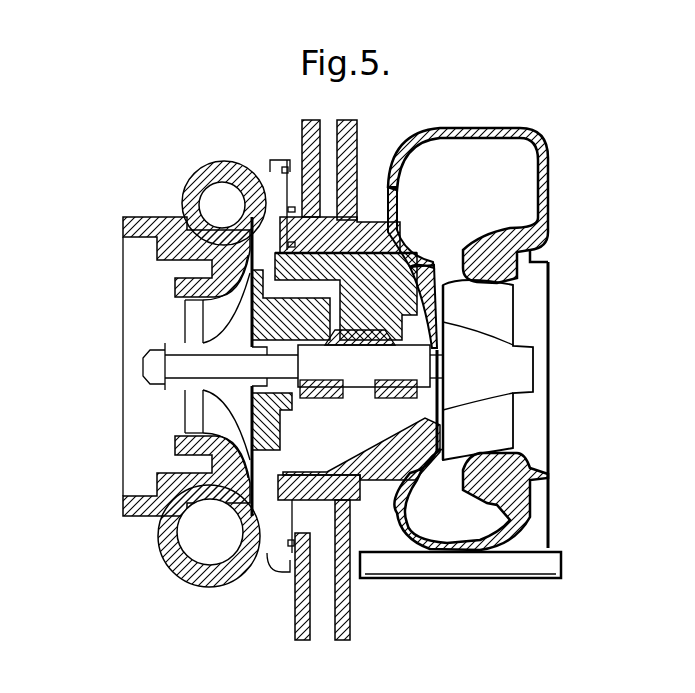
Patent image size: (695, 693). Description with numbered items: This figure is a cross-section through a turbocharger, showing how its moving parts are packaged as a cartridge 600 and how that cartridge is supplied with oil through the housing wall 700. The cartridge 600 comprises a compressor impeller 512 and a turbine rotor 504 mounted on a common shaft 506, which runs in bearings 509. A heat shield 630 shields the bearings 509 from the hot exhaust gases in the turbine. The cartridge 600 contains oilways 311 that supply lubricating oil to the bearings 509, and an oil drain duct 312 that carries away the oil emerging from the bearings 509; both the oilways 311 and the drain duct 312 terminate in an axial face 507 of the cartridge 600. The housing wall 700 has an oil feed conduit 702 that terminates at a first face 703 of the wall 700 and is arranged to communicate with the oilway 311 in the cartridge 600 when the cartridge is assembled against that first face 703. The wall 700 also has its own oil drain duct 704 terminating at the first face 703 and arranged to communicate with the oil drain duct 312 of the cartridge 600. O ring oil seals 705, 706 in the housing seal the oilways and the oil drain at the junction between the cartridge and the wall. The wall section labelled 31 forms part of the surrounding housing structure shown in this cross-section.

The turbine housing wall 31 is at (533, 153).
The oilways 311 is at (250, 220).
The oil drain duct 312 is at (247, 515).
The turbine rotor 504 is at (497, 308).
The common shaft 506 is at (413, 368).
The axial face 507 is at (295, 575).
The bearings 509 is at (381, 397).
The compressor impeller 512 is at (217, 387).
The cartridge 600 is at (410, 263).
The heat shield 630 is at (440, 285).
The housing wall 700 is at (388, 162).
The oil feed conduit 702 is at (337, 152).
The first face 703 is at (185, 222).
The oil drain duct 704 is at (300, 606).
The O ring oil seal 705 is at (302, 160).
The O ring oil seal 706 is at (340, 575).